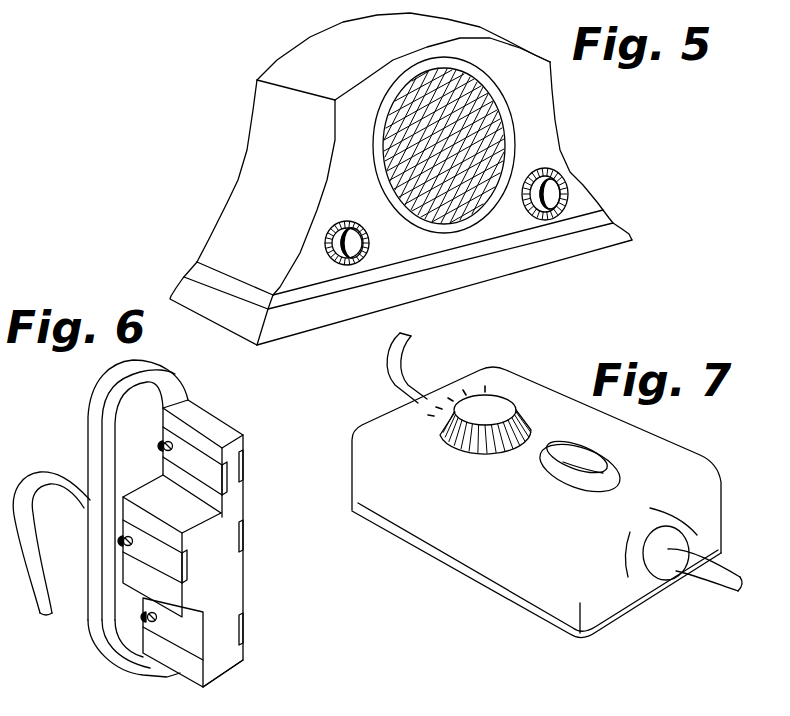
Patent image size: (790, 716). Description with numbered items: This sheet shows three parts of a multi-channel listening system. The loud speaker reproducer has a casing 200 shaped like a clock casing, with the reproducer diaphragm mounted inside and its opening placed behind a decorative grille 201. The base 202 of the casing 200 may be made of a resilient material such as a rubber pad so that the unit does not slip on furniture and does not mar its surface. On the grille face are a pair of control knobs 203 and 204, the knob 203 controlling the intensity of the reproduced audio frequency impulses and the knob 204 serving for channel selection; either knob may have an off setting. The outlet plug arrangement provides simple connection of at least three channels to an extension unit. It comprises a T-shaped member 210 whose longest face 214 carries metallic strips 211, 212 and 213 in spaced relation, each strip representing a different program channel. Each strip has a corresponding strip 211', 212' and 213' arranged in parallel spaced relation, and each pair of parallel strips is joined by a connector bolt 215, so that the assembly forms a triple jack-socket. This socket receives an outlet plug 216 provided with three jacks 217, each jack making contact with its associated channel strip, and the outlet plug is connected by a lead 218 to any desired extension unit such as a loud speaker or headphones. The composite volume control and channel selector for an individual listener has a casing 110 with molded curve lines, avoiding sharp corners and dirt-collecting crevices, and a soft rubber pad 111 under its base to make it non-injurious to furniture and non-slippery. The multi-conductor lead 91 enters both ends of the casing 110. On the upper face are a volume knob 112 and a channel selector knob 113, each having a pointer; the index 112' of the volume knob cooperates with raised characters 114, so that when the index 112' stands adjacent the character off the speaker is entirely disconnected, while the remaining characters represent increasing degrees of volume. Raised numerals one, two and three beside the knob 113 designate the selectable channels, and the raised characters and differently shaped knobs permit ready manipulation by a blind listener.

In FIG. 7, the lead 91 is at (400, 363).
In FIG. 7, the casing 110 is at (705, 495).
In FIG. 7, the soft rubber pad 111 is at (618, 603).
In FIG. 7, the volume knob 112 is at (492, 398).
In FIG. 7, the pointer 112' is at (437, 454).
In FIG. 7, the channel selector knob 113 is at (543, 463).
In FIG. 7, the raised characters 114 is at (463, 387).
In FIG. 5, the casing 200 is at (294, 50).
In FIG. 5, the decorative grille 201 is at (467, 75).
In FIG. 5, the base 202 is at (635, 239).
In FIG. 5, the control knob 203 is at (352, 250).
In FIG. 5, the control knob 204 is at (552, 192).
In FIG. 6, the T-shaped member 210 is at (235, 445).
In FIG. 6, the metallic strip 211 is at (283, 457).
In FIG. 6, the metallic strip 212 is at (283, 525).
In FIG. 6, the metallic strip 213 is at (284, 619).
In FIG. 6, the strip 211' is at (213, 446).
In FIG. 6, the strip 212' is at (178, 551).
In FIG. 6, the strip 213' is at (194, 636).
In FIG. 6, the longest face 214 is at (238, 657).
In FIG. 6, the connector bolt 215 is at (172, 443).
In FIG. 6, the outlet plug 216 is at (147, 385).
In FIG. 6, the jack 217 is at (163, 445).
In FIG. 6, the lead 218 is at (40, 471).